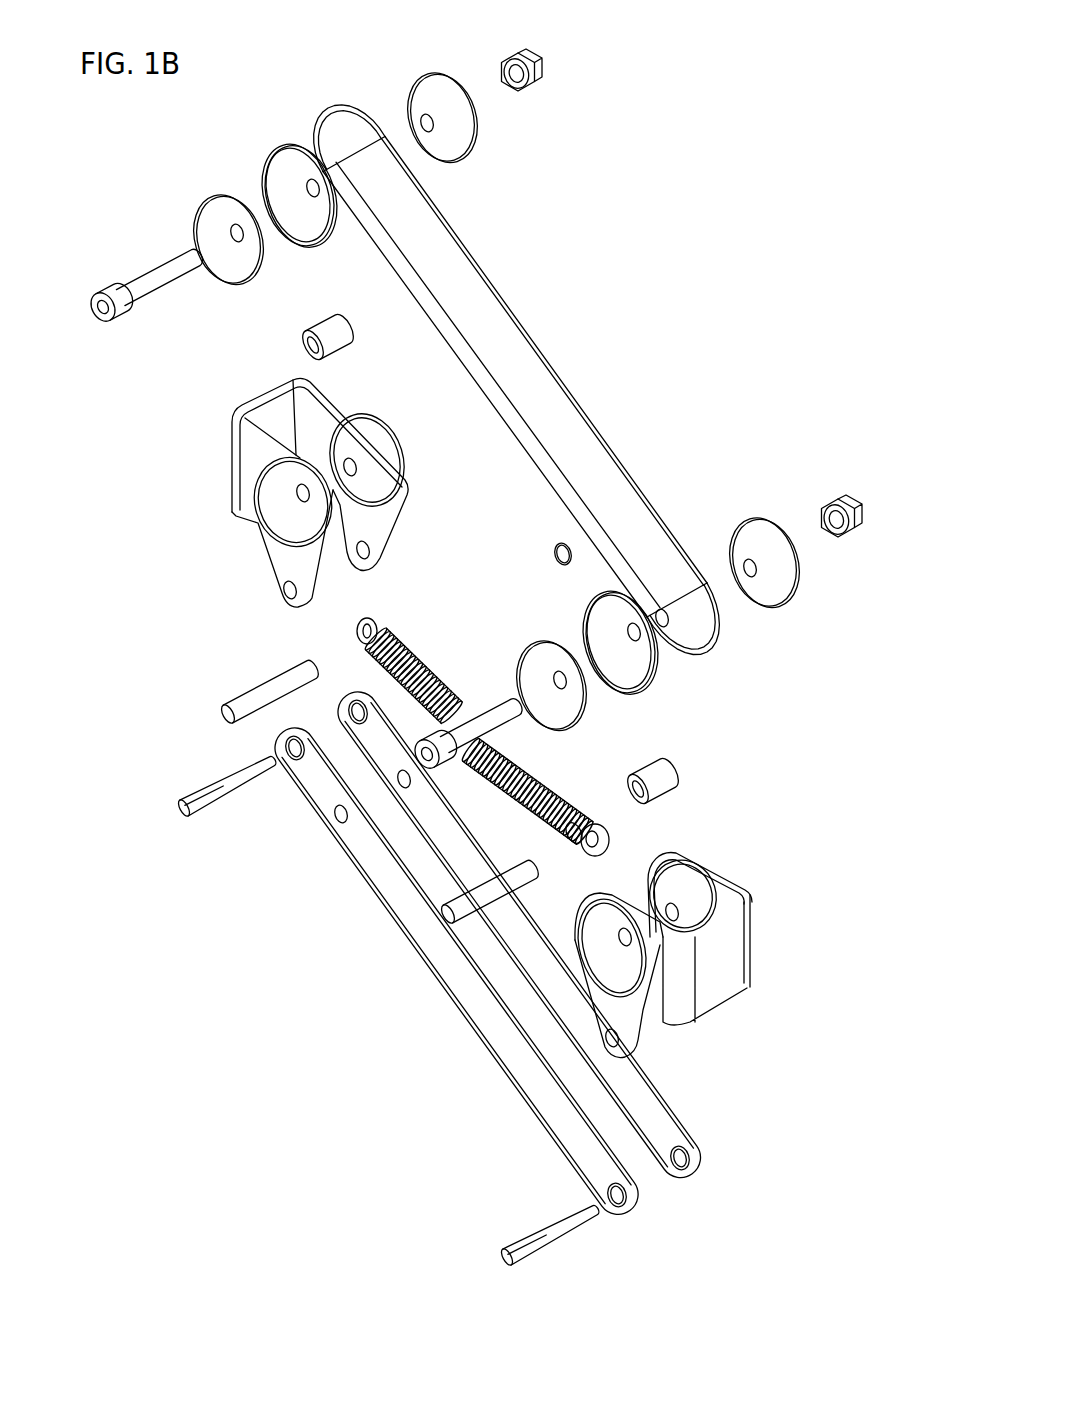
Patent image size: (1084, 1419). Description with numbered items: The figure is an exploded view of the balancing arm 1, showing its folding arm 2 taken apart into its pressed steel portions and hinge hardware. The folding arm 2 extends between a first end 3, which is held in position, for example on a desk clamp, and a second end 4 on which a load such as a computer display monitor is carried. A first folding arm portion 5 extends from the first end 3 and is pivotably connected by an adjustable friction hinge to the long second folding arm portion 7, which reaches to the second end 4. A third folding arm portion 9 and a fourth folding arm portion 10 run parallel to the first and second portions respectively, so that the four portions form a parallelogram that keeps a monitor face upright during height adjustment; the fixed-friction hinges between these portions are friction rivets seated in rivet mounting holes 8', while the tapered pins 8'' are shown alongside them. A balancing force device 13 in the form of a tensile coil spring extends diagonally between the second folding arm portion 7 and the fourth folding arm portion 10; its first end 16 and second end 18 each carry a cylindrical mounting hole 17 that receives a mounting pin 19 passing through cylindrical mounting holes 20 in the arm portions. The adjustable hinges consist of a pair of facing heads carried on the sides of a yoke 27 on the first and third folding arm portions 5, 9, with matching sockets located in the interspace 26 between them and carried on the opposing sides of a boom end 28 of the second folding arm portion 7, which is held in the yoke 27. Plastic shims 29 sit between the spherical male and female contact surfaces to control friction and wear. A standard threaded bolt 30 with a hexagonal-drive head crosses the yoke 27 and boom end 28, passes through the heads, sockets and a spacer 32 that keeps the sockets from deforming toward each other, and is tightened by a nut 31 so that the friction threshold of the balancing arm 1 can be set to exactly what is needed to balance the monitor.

The balancing arm 1 is at (746, 159).
The folding arm 2 is at (820, 759).
The first end 3 is at (701, 968).
The second end 4 is at (264, 482).
The first folding arm portion 5 is at (615, 1012).
The second folding arm portion 7 is at (517, 383).
The rivet mounting hole 8' is at (401, 899).
The tapered pin 8'' is at (323, 1026).
The third folding arm portion 9 is at (288, 553).
The fourth folding arm portion 10 is at (380, 863).
The balancing force device 13 is at (505, 787).
The first end of coil spring 16 is at (568, 831).
The cylindrical mounting hole 17 is at (358, 638).
The second end of coil spring 18 is at (378, 630).
The mounting pin 19 is at (224, 718).
The cylindrical mounting hole 20 is at (557, 556).
The interspace 26 is at (462, 637).
The yoke 27 is at (773, 957).
The boom end 28 is at (498, 395).
The shim 29 is at (212, 222).
The threaded bolt 30 is at (162, 277).
The nut 31 is at (500, 55).
The spacer 32 is at (330, 313).